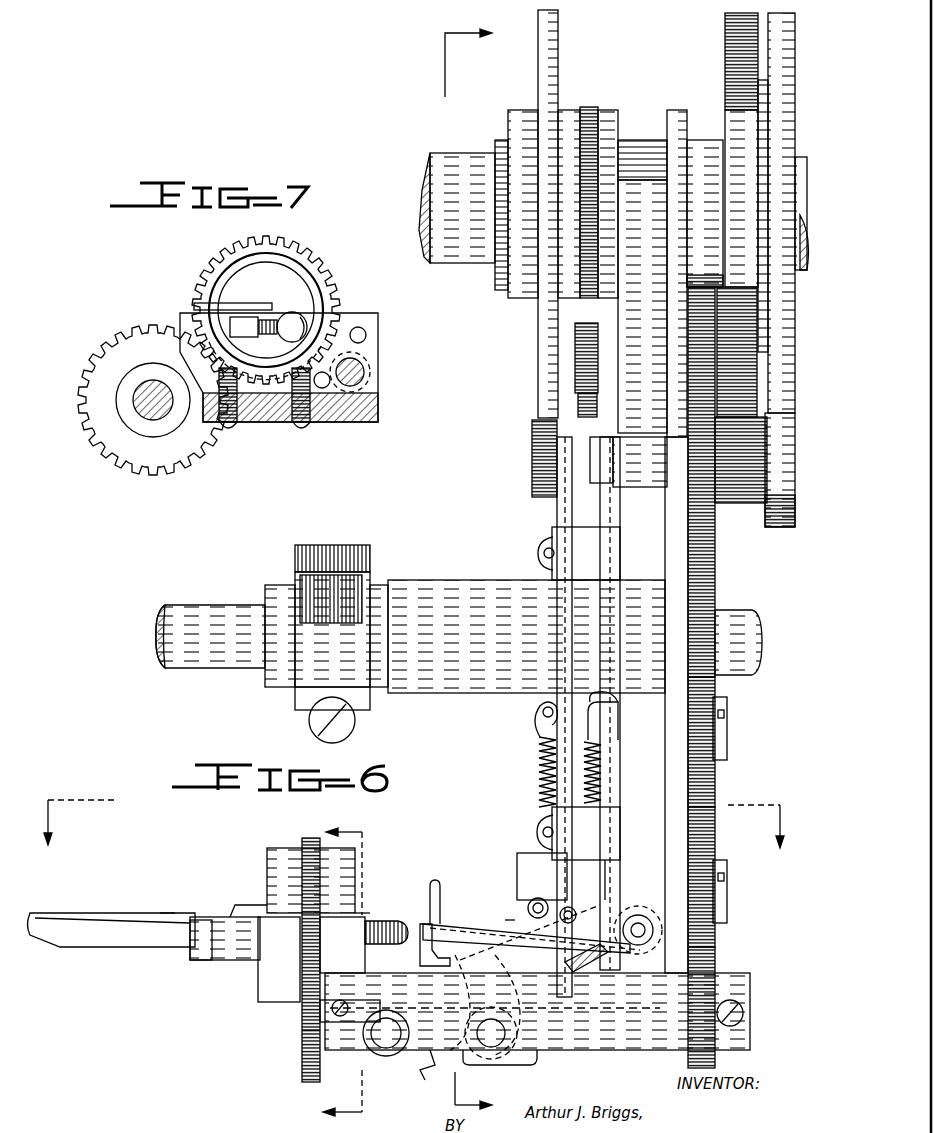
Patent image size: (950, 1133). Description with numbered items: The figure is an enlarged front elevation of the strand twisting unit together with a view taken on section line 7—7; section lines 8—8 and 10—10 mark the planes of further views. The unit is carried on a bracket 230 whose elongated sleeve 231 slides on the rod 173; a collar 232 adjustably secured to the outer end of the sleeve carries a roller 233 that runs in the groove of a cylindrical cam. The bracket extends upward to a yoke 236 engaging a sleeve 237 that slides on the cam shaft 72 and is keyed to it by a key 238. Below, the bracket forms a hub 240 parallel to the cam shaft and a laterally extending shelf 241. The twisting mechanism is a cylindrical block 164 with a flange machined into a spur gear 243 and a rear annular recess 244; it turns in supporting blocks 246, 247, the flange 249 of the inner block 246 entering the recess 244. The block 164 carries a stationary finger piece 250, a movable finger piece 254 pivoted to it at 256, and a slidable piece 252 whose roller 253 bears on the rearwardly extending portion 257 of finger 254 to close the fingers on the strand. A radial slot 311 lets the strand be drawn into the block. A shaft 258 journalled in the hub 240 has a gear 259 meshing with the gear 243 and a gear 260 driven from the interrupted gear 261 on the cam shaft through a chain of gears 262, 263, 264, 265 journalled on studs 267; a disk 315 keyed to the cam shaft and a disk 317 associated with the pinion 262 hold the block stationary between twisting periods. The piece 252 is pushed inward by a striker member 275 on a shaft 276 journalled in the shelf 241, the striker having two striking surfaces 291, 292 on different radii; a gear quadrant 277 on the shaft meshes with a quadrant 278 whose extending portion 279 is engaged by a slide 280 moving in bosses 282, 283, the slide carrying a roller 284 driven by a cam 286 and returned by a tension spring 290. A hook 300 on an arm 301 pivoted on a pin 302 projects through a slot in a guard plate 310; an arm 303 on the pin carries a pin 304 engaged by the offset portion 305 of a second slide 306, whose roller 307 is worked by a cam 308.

In FIG. 6, the section line 10- 10 is at (480, 568).
In FIG. 6, the key 238 is at (455, 165).
In FIG. 6, the cam shaft 72 is at (470, 256).
In FIG. 6, the cam 308 is at (540, 356).
In FIG. 6, the roller 307 is at (535, 442).
In FIG. 6, the cam 286 is at (590, 118).
In FIG. 6, the roller 284 is at (590, 414).
In FIG. 6, the sleeve 237 is at (636, 150).
In FIG. 6, the yoke 236 is at (668, 220).
In FIG. 6, the gear 263 is at (715, 568).
In FIG. 6, the gear 264 is at (715, 770).
In FIG. 6, the gear 265 is at (715, 845).
In FIG. 6, the gear 260 is at (715, 975).
In FIG. 6, the interrupted gear 261 is at (728, 50).
In FIG. 6, the pinion 262 is at (745, 500).
In FIG. 6, the disk 315 is at (762, 90).
In FIG. 6, the disk 317 is at (780, 527).
In FIG. 6, the rod 173 is at (191, 612).
In FIG. 6, the roller 233 is at (322, 556).
In FIG. 6, the collar 232 is at (300, 704).
In FIG. 6, the sleeve 231 is at (464, 690).
In FIG. 6, the bracket 230 is at (665, 690).
In FIG. 6, the boss 283 is at (552, 556).
In FIG. 6, the slide 306 is at (540, 782).
In FIG. 6, the tension spring 290 is at (602, 784).
In FIG. 6, the boss 282 is at (552, 830).
In FIG. 6, the slide 280 is at (612, 870).
In FIG. 6, the offset portion 305 is at (518, 872).
In FIG. 6, the arm 301 is at (472, 928).
In FIG. 6, the striking surface 292 is at (500, 925).
In FIG. 6, the pin 304 is at (517, 917).
In FIG. 6, the pin 302 is at (640, 922).
In FIG. 6, the arm 303 is at (550, 940).
In FIG. 6, the hook 300 is at (436, 880).
In FIG. 6, the guard plate 310 is at (437, 945).
In FIG. 6, the striking surface 291 is at (495, 980).
In FIG. 6, the extending portion 279 is at (598, 966).
In FIG. 6, the studs 267 is at (728, 722).
In FIG. 6, the hub 240 is at (598, 1047).
In FIG. 6, the shaft 276 is at (399, 1060).
In FIG. 6, the quadrant 278 is at (465, 1072).
In FIG. 6, the gear quadrant 277 is at (422, 1080).
In FIG. 6, the striker member 275 is at (540, 1060).
In FIG. 6, the gear 259 is at (308, 1040).
In FIG. 6, the shelf 241 is at (333, 1045).
In FIG. 7, the shelf 241 is at (378, 406).
In FIG. 6, the supporting block 247 is at (279, 959).
In FIG. 6, the supporting block 246 is at (342, 966).
In FIG. 7, the supporting block 246 is at (372, 354).
In FIG. 6, the spur gear 243 is at (311, 842).
In FIG. 7, the spur gear 243 is at (213, 268).
In FIG. 6, the cylindrical block 164 is at (275, 871).
In FIG. 7, the cylindrical block 164 is at (288, 288).
In FIG. 6, the slot 311 is at (358, 914).
In FIG. 7, the slot 311 is at (253, 304).
In FIG. 6, the piece 252 is at (386, 924).
In FIG. 7, the piece 252 is at (288, 318).
In FIG. 6, the movable finger piece 254 is at (128, 935).
In FIG. 6, the stationary finger piece 250 is at (160, 918).
In FIG. 6, the pivot 256 is at (205, 960).
In FIG. 6, the section line 7- 7 is at (342, 970).
In FIG. 6, the section line 8- 8 is at (412, 834).
In FIG. 7, the annular recess 244 is at (320, 298).
In FIG. 7, the rearwardly extending portion 257 is at (250, 328).
In FIG. 7, the roller 253 is at (273, 312).
In FIG. 7, the flange 249 is at (148, 472).
In FIG. 7, the shaft 258 is at (155, 420).